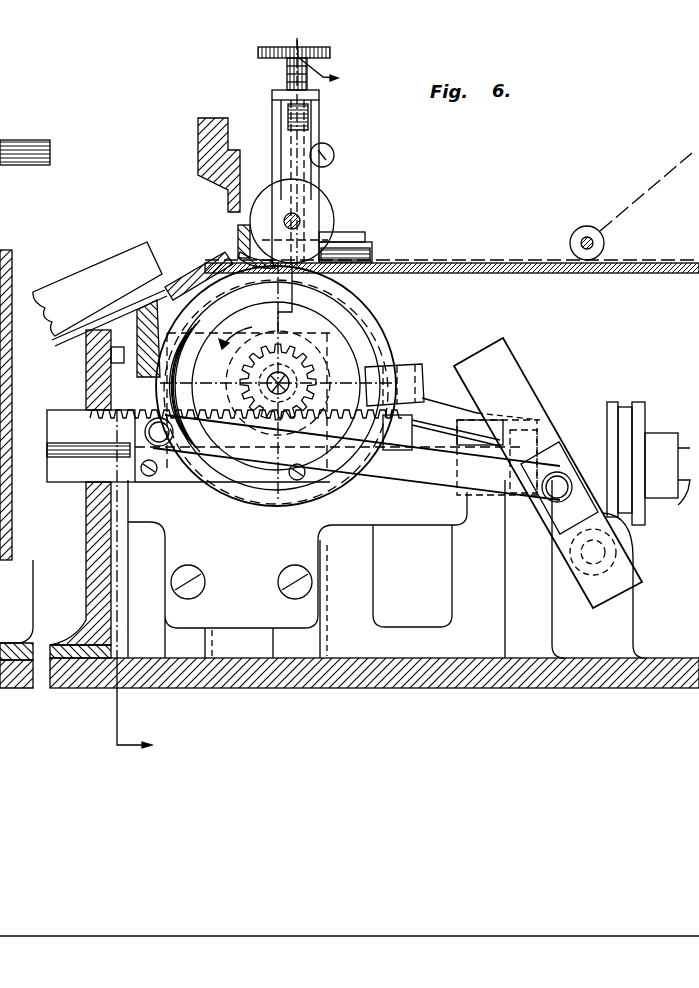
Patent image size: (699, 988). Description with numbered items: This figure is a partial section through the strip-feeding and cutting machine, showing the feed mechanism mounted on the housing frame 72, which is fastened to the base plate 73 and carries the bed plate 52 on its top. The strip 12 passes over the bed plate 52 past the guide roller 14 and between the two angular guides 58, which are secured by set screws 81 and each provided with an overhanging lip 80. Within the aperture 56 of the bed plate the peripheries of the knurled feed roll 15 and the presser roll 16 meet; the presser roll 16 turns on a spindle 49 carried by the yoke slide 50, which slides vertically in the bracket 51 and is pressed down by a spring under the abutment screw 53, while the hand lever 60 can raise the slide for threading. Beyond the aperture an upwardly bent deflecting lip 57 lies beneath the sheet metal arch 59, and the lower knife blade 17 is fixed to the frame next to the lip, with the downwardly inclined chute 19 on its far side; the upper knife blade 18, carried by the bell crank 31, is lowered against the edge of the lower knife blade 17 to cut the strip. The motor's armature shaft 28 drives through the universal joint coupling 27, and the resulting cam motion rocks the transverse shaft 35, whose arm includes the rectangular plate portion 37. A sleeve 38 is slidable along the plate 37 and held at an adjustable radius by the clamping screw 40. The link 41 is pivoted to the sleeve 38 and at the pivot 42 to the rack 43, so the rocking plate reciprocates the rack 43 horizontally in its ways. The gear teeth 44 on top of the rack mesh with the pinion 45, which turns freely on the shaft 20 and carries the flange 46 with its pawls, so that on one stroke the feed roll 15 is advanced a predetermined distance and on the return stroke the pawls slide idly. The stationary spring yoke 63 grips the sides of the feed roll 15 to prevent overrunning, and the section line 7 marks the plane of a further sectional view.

The section line 7- 7 is at (236, 397).
The strip 12 is at (505, 261).
The guide roller 14 is at (578, 232).
The feed roll 15 is at (378, 328).
The presser roll 16 is at (330, 218).
The lower knife blade 17 is at (212, 256).
The upper knife blade 18 is at (235, 205).
The chute 19 is at (97, 289).
The shaft 20 is at (296, 382).
The universal joint coupling 27 is at (633, 406).
The armature shaft 28 is at (667, 485).
The bell crank 31 is at (200, 158).
The transverse shaft 35 is at (585, 565).
The rectangular plate portion 37 is at (514, 367).
The sleeve 38 is at (542, 448).
The clamping screw 40 is at (544, 498).
The link 41 is at (430, 478).
The pivot 42 is at (8, 425).
The rack 43 is at (283, 446).
The gear teeth 44 is at (62, 390).
The pinion 45 is at (250, 380).
The flange 46 is at (296, 298).
The spindle 49 is at (298, 218).
The yoke slide 50 is at (334, 141).
The bracket 51 is at (310, 134).
The bed plate 52 is at (508, 273).
The abutment screw 53 is at (288, 68).
The aperture 56 is at (335, 306).
The deflecting lip 57 is at (240, 233).
The angular guides 58 is at (372, 258).
The sheet metal arch 59 is at (246, 216).
The hand lever 60 is at (8, 121).
The spring yoke 63 is at (418, 365).
The housing frame 72 is at (86, 532).
The base plate 73 is at (645, 672).
The overhanging lip 80 is at (370, 243).
The set screws 81 is at (354, 232).